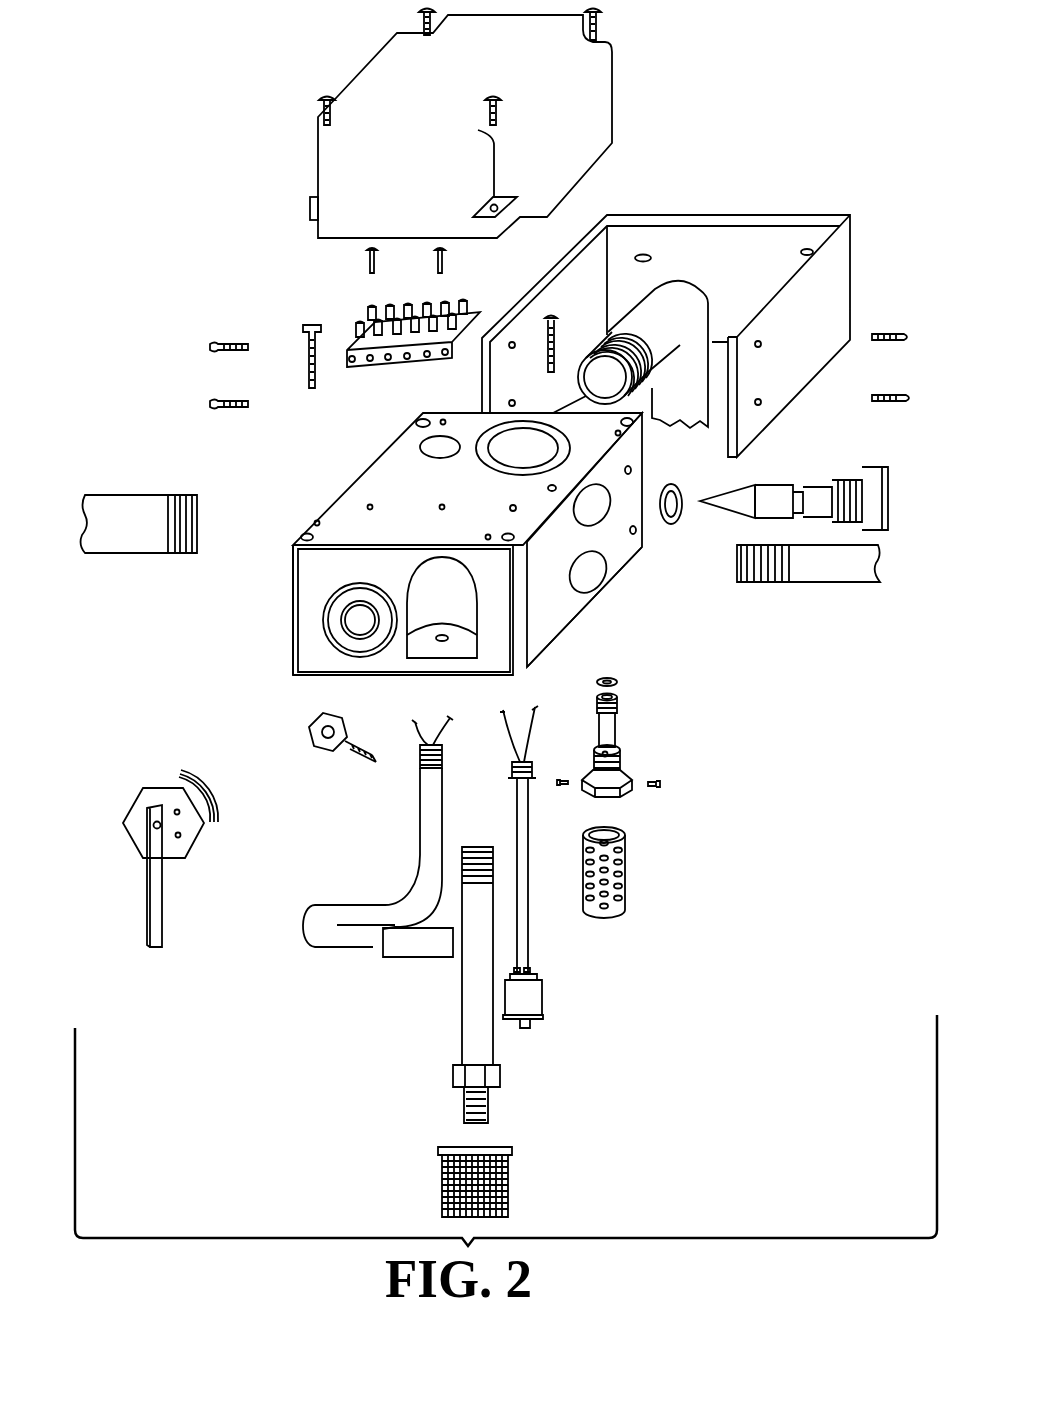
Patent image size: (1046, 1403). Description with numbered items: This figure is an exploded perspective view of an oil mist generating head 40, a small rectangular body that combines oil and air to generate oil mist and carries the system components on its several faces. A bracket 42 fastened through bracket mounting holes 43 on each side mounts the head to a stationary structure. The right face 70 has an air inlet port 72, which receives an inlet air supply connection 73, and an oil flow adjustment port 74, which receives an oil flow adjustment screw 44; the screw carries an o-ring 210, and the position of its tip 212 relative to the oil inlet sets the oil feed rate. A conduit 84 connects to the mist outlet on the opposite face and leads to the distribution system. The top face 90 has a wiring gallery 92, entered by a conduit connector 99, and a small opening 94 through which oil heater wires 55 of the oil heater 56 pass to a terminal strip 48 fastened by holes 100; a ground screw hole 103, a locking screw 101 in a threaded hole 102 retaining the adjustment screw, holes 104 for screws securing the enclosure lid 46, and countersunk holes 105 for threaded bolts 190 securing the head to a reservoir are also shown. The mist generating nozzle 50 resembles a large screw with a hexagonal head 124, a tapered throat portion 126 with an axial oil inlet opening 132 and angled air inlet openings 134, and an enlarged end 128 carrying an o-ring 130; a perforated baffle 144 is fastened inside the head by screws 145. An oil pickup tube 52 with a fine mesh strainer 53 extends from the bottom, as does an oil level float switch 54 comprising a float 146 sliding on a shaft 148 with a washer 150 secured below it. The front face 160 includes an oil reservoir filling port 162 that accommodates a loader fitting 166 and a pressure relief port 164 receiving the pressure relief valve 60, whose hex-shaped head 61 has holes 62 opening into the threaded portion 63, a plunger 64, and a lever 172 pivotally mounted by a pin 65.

The mist generating head 40 is at (315, 485).
The bracket 42 is at (840, 290).
The bracket mounting holes 43 is at (630, 468).
The oil flow adjustment screw 44 is at (873, 502).
The enclosure lid 46 is at (593, 97).
The terminal strip 48 is at (352, 337).
The mist generating nozzle 50 is at (634, 722).
The oil pickup tube 52 is at (470, 1005).
The strainer 53 is at (512, 1172).
The oil level float switch 54 is at (561, 873).
The oil heater wires 55 is at (399, 836).
The oil heater 56 is at (428, 862).
The pressure relief valve 60 is at (195, 837).
The hex-shaped head 61 is at (127, 822).
The holes 62 is at (180, 813).
The threaded portion 63 is at (218, 800).
The plunger 64 is at (212, 775).
The pin 65 is at (160, 828).
The right face 70 is at (550, 638).
The air inlet port 72 is at (592, 574).
The inlet air supply connection 73 is at (833, 565).
The oil flow adjustment port 74 is at (596, 512).
The conduit 84 is at (118, 503).
The top face 90 is at (387, 462).
The wiring gallery 92 is at (510, 450).
The small opening 94 is at (420, 447).
The conduit connector 99 is at (688, 297).
The holes 100 is at (372, 506).
The locking screw 101 is at (560, 333).
The threaded hole 102 is at (550, 488).
The ground screw hole 103 is at (515, 512).
The holes 104 is at (618, 434).
The holes 105 is at (305, 537).
The hexagonal head 124 is at (632, 778).
The throat portion 126 is at (612, 732).
The enlarged end 128 is at (615, 695).
The o-ring 130 is at (612, 680).
The axial oil inlet opening 132 is at (598, 682).
The air inlet openings 134 is at (598, 750).
The baffle 144 is at (625, 850).
The screws 145 is at (685, 796).
The float 146 is at (540, 990).
The shaft 148 is at (527, 895).
The washer 150 is at (535, 1020).
The front face 160 is at (307, 624).
The oil reservoir filling port 162 is at (442, 642).
The pressure relief port 164 is at (360, 618).
The loader fitting 166 is at (312, 728).
The lever 172 is at (162, 893).
The threaded bolts 190 is at (312, 350).
The o-ring 210 is at (680, 515).
The tip 212 is at (752, 492).